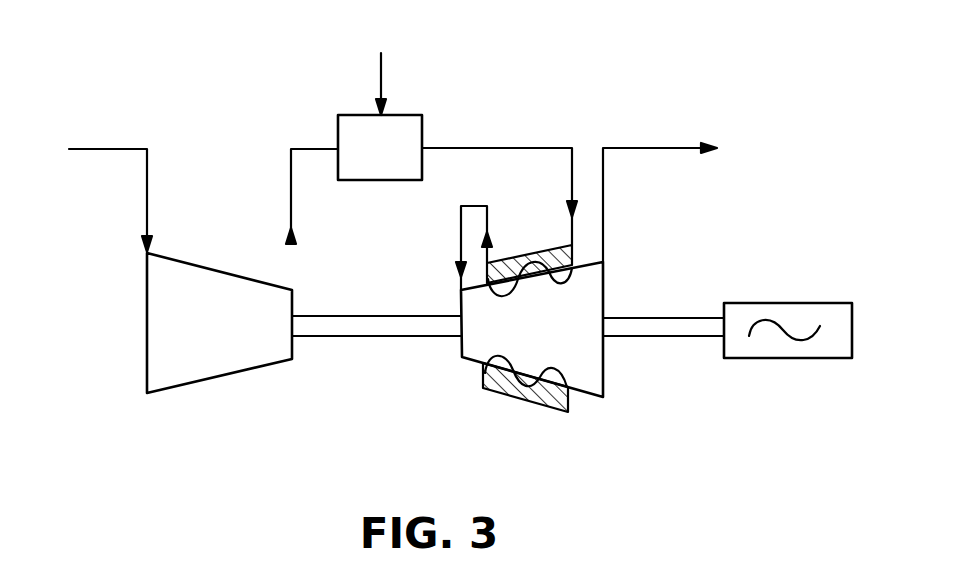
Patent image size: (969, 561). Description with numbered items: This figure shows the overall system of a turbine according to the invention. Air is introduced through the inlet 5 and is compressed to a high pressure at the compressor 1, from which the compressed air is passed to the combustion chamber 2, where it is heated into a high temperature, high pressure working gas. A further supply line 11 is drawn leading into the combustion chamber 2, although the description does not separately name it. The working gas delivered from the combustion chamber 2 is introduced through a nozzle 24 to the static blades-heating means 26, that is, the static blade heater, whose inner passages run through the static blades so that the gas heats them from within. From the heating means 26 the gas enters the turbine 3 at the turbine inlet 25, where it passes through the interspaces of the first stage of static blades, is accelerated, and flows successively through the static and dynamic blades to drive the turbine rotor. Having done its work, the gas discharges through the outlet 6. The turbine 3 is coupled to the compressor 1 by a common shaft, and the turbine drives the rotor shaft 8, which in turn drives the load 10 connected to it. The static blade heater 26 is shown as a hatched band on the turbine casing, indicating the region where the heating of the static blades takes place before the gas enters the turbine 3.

The compressor 1 is at (207, 268).
The combustion chamber 2 is at (347, 115).
The turbine 3 is at (591, 394).
The inlet 5 is at (110, 149).
The outlet 6 is at (675, 148).
The rotor shaft 8 is at (690, 338).
The load 10 is at (783, 303).
The fuel supply 11 is at (385, 73).
The nozzle 24 is at (571, 181).
The turbine inlet 25 is at (460, 253).
The static blades-heating means 26 is at (505, 395).